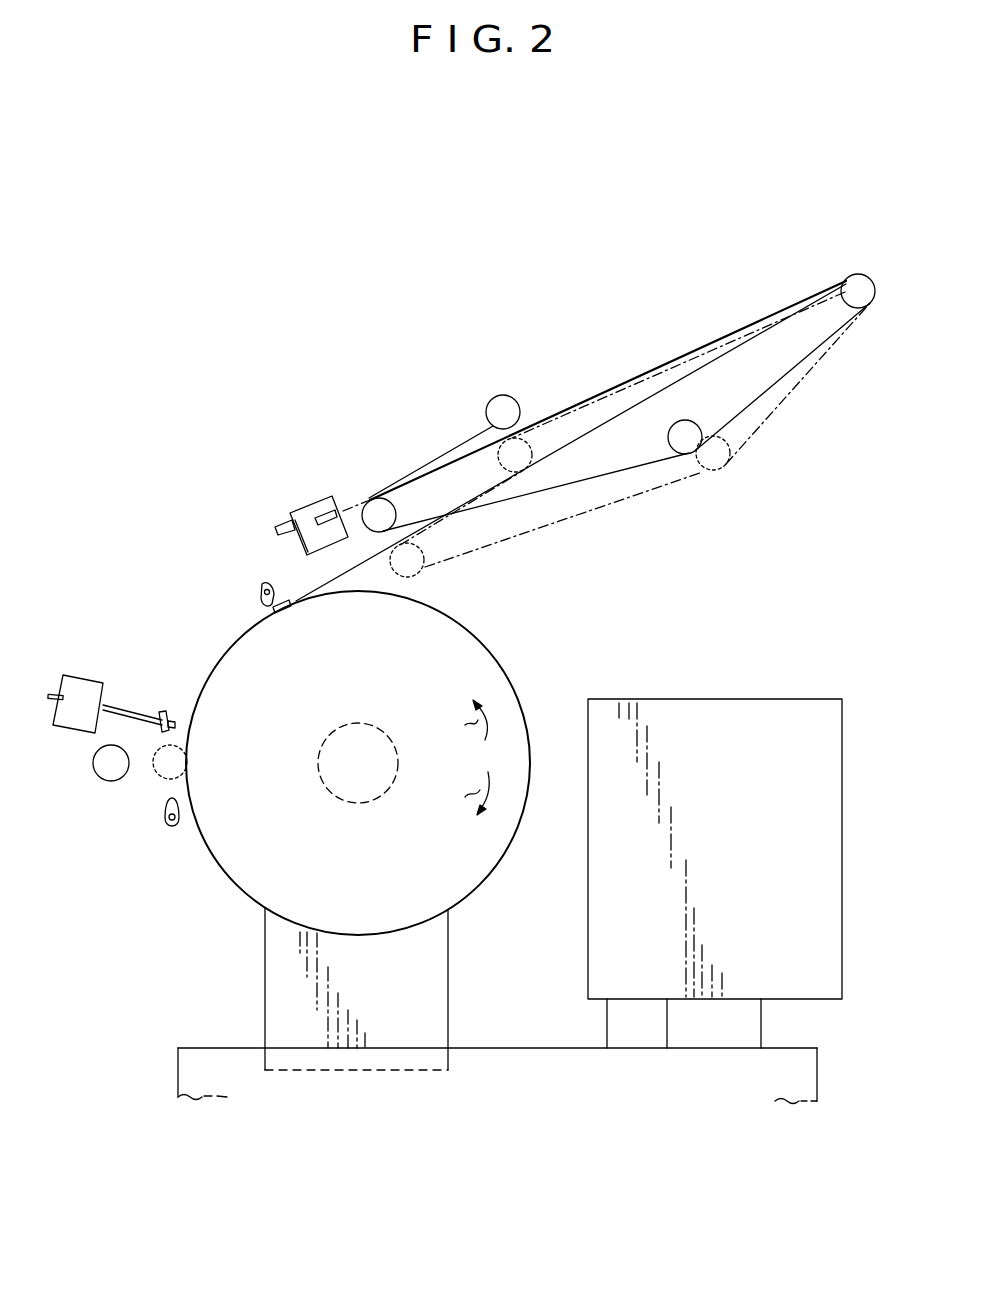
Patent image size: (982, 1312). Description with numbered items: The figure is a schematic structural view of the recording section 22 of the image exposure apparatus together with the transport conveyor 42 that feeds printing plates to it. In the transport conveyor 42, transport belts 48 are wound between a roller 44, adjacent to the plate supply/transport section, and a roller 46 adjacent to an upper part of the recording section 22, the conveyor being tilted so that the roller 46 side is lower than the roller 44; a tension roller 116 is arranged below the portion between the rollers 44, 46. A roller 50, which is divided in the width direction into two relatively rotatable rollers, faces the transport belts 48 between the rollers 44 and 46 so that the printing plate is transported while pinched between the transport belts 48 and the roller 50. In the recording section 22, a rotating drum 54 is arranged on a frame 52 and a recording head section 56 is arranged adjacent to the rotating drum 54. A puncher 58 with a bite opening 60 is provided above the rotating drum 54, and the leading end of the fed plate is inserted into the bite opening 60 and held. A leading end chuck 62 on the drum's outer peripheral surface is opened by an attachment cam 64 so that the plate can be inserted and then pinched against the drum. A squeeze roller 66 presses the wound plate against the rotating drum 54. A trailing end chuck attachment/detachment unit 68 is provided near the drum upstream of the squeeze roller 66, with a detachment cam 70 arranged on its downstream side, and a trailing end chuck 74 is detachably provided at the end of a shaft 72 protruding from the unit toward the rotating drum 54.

The recording section 22 is at (528, 216).
The transport conveyor 42 is at (630, 337).
The roller 44 is at (853, 287).
The roller 46 is at (386, 503).
The transport belts 48 is at (686, 350).
The roller 50 is at (500, 447).
The frame 52 is at (207, 1063).
The rotating drum 54 is at (470, 873).
The recording head section 56 is at (710, 720).
The puncher 58 is at (312, 500).
The bite opening 60 is at (335, 517).
The leading end chuck 62 is at (282, 585).
The attachment cam 64 is at (256, 585).
The squeeze roller 66 is at (110, 770).
The trailing end chuck attachment/detachment unit 68 is at (118, 684).
The detachment cam 70 is at (167, 847).
The shaft 72 is at (137, 712).
The trailing end chuck 74 is at (165, 706).
The tension roller 116 is at (674, 455).